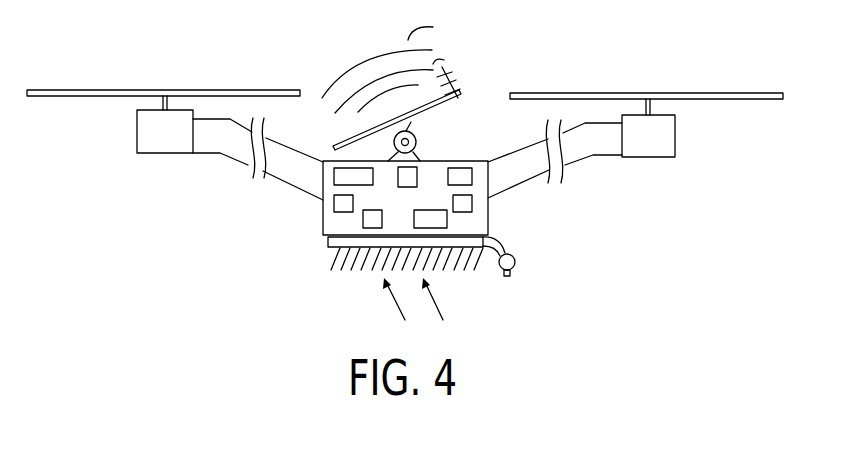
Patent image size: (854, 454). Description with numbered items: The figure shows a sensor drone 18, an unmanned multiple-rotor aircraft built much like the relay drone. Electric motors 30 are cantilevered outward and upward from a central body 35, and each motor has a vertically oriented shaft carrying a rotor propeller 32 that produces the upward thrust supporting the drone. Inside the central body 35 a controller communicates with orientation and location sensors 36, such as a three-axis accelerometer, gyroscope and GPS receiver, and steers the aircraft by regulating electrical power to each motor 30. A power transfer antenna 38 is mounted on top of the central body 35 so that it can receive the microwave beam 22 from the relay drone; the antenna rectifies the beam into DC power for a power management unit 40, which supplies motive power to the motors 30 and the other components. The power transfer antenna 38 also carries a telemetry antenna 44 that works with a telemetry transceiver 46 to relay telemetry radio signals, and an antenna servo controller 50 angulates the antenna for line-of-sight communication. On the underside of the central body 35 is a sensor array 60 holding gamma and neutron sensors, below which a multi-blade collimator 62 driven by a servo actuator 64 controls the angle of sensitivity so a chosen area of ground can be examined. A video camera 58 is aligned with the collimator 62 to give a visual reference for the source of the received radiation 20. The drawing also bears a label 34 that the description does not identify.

The sensor drone 18 is at (566, 45).
The received radiation 20 is at (431, 50).
The microwave beam 22 is at (377, 65).
The electric motor 30 is at (137, 145).
The rotor propeller 32 is at (166, 89).
The housing 34 is at (323, 163).
The central body 35 is at (323, 201).
The orientation and location sensors 36 is at (437, 162).
The power transfer antenna 38 is at (433, 107).
The power management unit 40 is at (472, 177).
The telemetry antenna 44 is at (458, 83).
The telemetry transceiver 46 is at (334, 204).
The antenna servo controller 50 is at (472, 204).
The video camera 58 is at (513, 272).
The sensor array 60 is at (489, 268).
The multi-blade collimator 62 is at (327, 265).
The servo actuator 64 is at (363, 221).